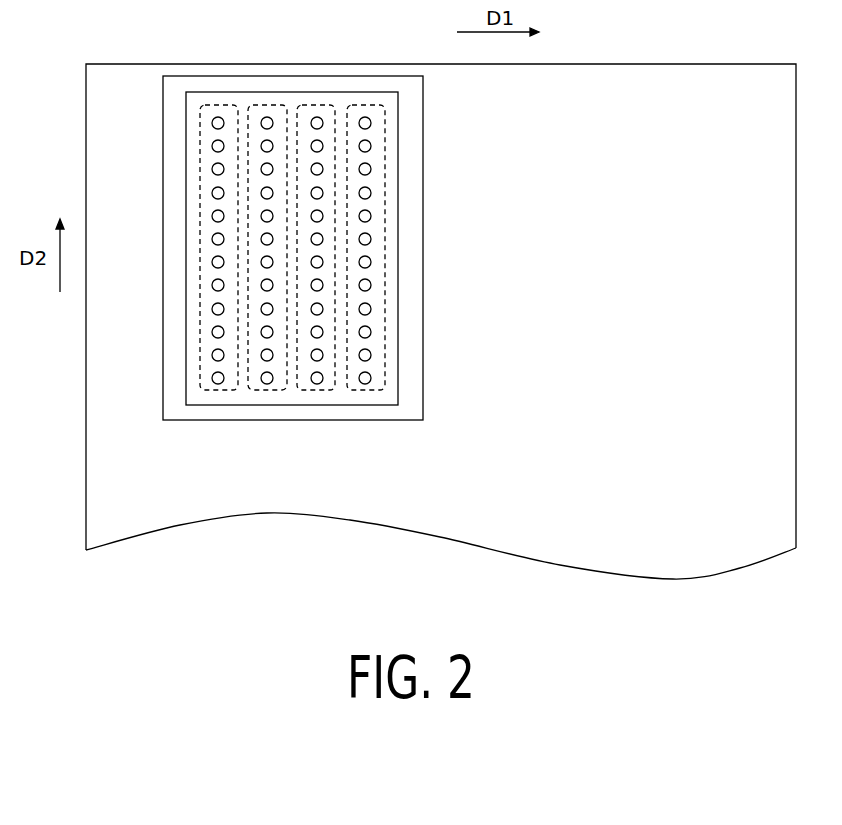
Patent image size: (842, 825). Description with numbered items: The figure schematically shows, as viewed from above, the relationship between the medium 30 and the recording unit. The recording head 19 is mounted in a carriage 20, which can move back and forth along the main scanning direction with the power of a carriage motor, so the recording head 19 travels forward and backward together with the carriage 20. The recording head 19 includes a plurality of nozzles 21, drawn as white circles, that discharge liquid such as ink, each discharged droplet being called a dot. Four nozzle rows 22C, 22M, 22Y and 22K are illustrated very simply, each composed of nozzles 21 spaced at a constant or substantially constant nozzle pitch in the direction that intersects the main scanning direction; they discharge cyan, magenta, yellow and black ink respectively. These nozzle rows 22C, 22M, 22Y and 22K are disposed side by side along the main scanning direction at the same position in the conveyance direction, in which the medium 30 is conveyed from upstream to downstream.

The recording head 19 is at (190, 193).
The carriage 20 is at (423, 128).
The nozzle 21 is at (371, 216).
The nozzle row 22C is at (208, 105).
The nozzle row 22M is at (264, 105).
The nozzle row 22Y is at (322, 105).
The nozzle row 22K is at (365, 105).
The medium 30 is at (448, 523).